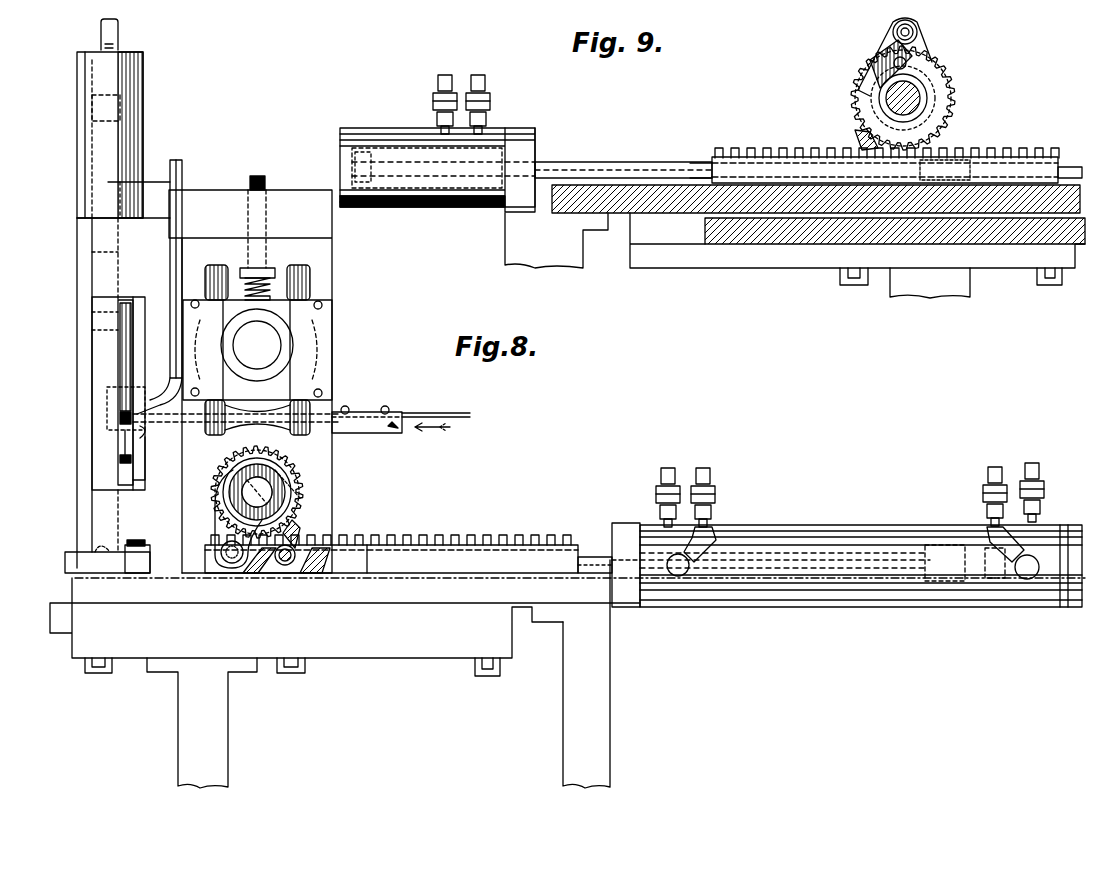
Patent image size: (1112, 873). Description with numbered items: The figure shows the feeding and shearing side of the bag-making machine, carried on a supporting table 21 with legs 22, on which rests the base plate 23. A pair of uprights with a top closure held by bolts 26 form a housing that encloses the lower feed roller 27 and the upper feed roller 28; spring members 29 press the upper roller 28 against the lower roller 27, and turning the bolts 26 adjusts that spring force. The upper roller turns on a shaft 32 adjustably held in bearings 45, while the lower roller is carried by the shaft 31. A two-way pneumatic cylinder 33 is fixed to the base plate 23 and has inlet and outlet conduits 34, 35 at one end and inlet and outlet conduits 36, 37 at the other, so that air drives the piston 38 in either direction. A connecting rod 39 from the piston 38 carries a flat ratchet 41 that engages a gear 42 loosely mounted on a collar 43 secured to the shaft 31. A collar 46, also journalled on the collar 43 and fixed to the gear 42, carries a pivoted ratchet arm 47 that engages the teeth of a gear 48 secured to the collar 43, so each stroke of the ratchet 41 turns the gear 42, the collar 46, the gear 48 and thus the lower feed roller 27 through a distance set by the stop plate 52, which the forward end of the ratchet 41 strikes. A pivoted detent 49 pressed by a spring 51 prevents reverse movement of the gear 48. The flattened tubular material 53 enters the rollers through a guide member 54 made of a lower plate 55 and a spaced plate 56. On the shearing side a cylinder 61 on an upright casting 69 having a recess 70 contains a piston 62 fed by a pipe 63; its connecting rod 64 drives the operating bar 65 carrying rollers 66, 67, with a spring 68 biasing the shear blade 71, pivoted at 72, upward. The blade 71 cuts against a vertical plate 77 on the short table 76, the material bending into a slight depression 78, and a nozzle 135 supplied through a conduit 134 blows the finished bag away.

In FIG. 8, the supporting table 21 is at (72, 618).
In FIG. 9, the supporting table 21 is at (785, 243).
In FIG. 8, the legs 22 is at (215, 700).
In FIG. 9, the legs 22 is at (885, 268).
In FIG. 8, the base plate 23 is at (522, 592).
In FIG. 9, the base plate 23 is at (620, 220).
In FIG. 8, the bolts 26 is at (266, 186).
In FIG. 8, the lower feed roller 27 is at (325, 486).
In FIG. 8, the upper feed roller 28 is at (333, 327).
In FIG. 8, the spring members 29 is at (275, 292).
In FIG. 8, the shaft 31 is at (268, 486).
In FIG. 9, the shaft 31 is at (885, 98).
In FIG. 8, the shaft 32 is at (262, 338).
In FIG. 8, the pneumatic cylinder 33 is at (820, 530).
In FIG. 9, the pneumatic cylinder 33 is at (378, 128).
In FIG. 8, the inlet conduit 34 is at (664, 466).
In FIG. 9, the inlet conduit 34 is at (445, 75).
In FIG. 8, the outlet conduit 35 is at (710, 468).
In FIG. 9, the outlet conduit 35 is at (490, 82).
In FIG. 8, the inlet conduit 36 is at (990, 466).
In FIG. 8, the outlet conduit 37 is at (1032, 463).
In FIG. 8, the piston 38 is at (920, 528).
In FIG. 9, the piston 38 is at (404, 128).
In FIG. 8, the connecting rod 39 is at (597, 556).
In FIG. 9, the connecting rod 39 is at (578, 165).
In FIG. 8, the flat ratchet 41 is at (512, 535).
In FIG. 9, the flat ratchet 41 is at (725, 148).
In FIG. 8, the gear 42 is at (212, 482).
In FIG. 9, the gear 42 is at (942, 92).
In FIG. 8, the collar 43 is at (285, 505).
In FIG. 9, the collar 43 is at (945, 74).
In FIG. 8, the bearings 45 is at (292, 352).
In FIG. 8, the collar 46 is at (222, 542).
In FIG. 9, the collar 46 is at (920, 44).
In FIG. 8, the ratchet arm 47 is at (236, 568).
In FIG. 9, the ratchet arm 47 is at (892, 30).
In FIG. 8, the gear 48 is at (300, 470).
In FIG. 9, the gear 48 is at (866, 66).
In FIG. 8, the pivoted detent 49 is at (290, 540).
In FIG. 9, the pivoted detent 49 is at (860, 140).
In FIG. 8, the spring 51 is at (296, 568).
In FIG. 8, the stop plate 52 is at (150, 552).
In FIG. 9, the stop plate 52 is at (1070, 167).
In FIG. 8, the material 53 is at (120, 410).
In FIG. 8, the guide member 54 is at (395, 422).
In FIG. 8, the lower plate 55 is at (400, 432).
In FIG. 8, the plate 56 is at (362, 410).
In FIG. 8, the cylinder 61 is at (143, 58).
In FIG. 8, the piston 62 is at (76, 86).
In FIG. 8, the pipe 63 is at (118, 28).
In FIG. 8, the connecting rod 64 is at (76, 204).
In FIG. 8, the operating bar 65 is at (90, 252).
In FIG. 8, the roller 66 is at (128, 297).
In FIG. 8, the roller 67 is at (120, 462).
In FIG. 8, the spring 68 is at (76, 530).
In FIG. 8, the upright casting 69 is at (98, 498).
In FIG. 8, the recess 70 is at (92, 298).
In FIG. 8, the shear blade 71 is at (118, 342).
In FIG. 8, the pivot 72 is at (106, 395).
In FIG. 8, the short table 76 is at (176, 434).
In FIG. 8, the vertical plate 77 is at (140, 462).
In FIG. 8, the depression 78 is at (142, 430).
In FIG. 8, the conduit 134 is at (183, 168).
In FIG. 8, the nozzle 135 is at (152, 395).